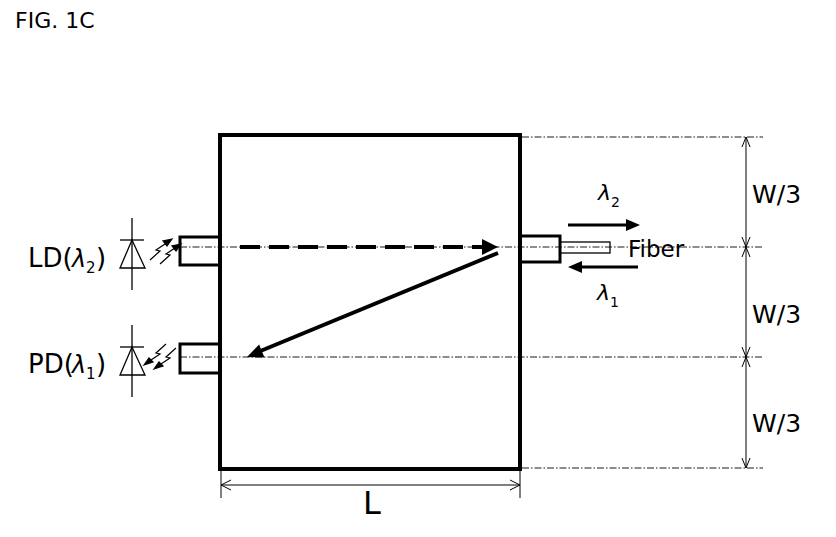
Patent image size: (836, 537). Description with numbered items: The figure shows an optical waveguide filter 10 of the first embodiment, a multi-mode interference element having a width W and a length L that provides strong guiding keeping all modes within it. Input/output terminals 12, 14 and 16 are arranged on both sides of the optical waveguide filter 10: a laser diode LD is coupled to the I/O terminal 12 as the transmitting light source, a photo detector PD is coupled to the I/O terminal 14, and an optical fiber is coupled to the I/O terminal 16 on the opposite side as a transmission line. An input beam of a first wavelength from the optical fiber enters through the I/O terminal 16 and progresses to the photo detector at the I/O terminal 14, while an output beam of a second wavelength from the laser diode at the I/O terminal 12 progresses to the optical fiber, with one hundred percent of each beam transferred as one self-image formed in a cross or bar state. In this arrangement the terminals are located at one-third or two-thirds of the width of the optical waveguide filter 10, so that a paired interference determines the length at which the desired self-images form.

The optical waveguide filter 10 is at (376, 108).
The input/output terminal 12 is at (197, 237).
The input/output terminal 14 is at (198, 373).
The input/output terminal 16 is at (540, 237).